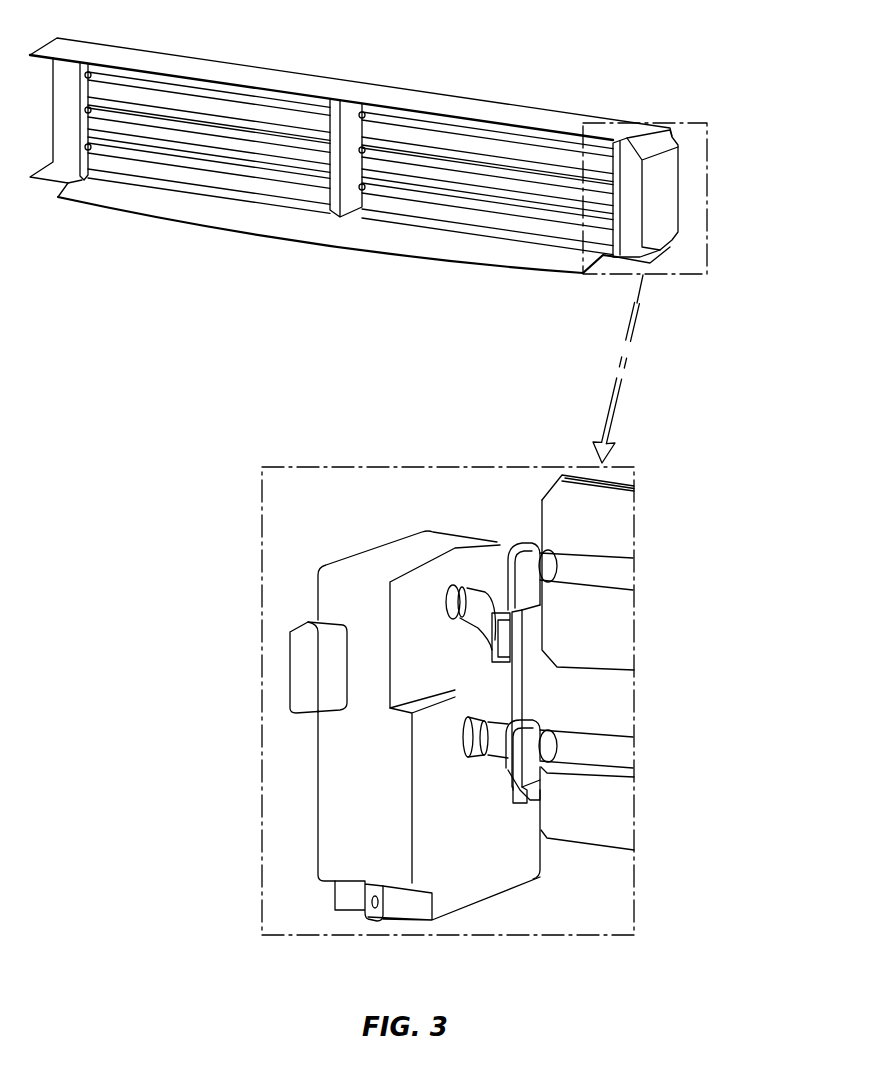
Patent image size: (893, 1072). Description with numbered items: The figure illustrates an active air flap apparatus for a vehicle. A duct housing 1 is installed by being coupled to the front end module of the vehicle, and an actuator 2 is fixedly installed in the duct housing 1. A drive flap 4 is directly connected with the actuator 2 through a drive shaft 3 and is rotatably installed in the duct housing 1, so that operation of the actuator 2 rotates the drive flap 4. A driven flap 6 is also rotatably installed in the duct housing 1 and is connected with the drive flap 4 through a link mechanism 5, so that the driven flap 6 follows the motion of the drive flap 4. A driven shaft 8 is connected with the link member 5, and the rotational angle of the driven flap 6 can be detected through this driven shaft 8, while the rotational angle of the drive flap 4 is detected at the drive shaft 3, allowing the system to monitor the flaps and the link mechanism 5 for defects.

The duct housing 1 is at (443, 107).
The actuator 2 is at (660, 190).
The drive shaft 3 is at (497, 748).
The drive flap 4 is at (447, 205).
The link mechanism 5 is at (532, 678).
The driven flap 6 is at (527, 150).
The driven shaft 8 is at (480, 605).